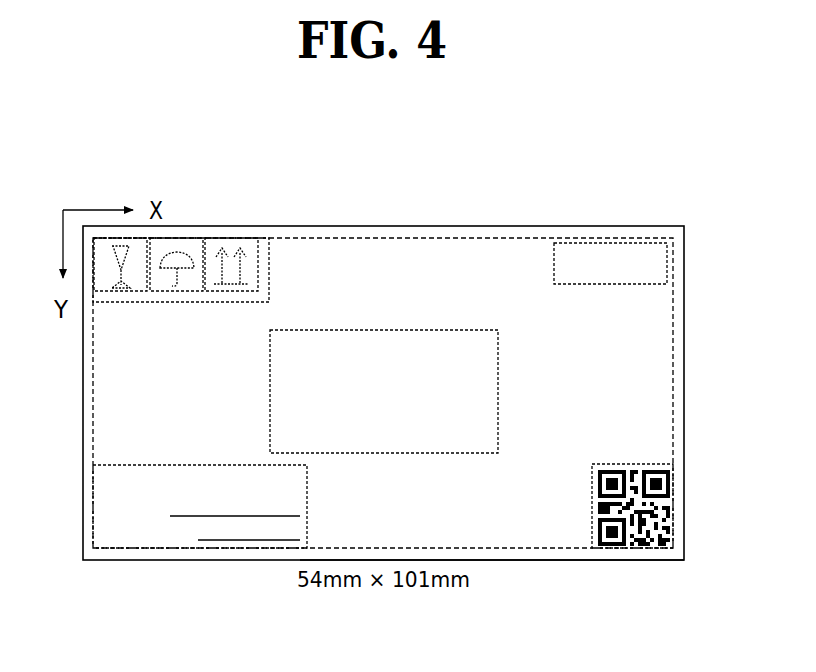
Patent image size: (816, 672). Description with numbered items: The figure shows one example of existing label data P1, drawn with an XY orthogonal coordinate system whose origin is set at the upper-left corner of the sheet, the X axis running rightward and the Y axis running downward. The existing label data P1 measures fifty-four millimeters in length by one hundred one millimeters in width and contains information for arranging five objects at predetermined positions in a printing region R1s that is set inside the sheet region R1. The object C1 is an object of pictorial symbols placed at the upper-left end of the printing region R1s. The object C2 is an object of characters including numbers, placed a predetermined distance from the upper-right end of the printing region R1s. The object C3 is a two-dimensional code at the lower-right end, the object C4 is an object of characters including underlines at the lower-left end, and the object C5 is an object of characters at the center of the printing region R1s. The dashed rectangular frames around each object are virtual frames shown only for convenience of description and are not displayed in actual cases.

The existing label data P1 is at (500, 190).
The sheet region R1 is at (648, 226).
The printing region R1s is at (530, 561).
The object of pictorial symbols C1 is at (194, 238).
The object of characters C2 is at (610, 248).
The object of two-dimensional code C3 is at (640, 549).
The object of characters C4 is at (190, 549).
The object of characters C5 is at (427, 352).